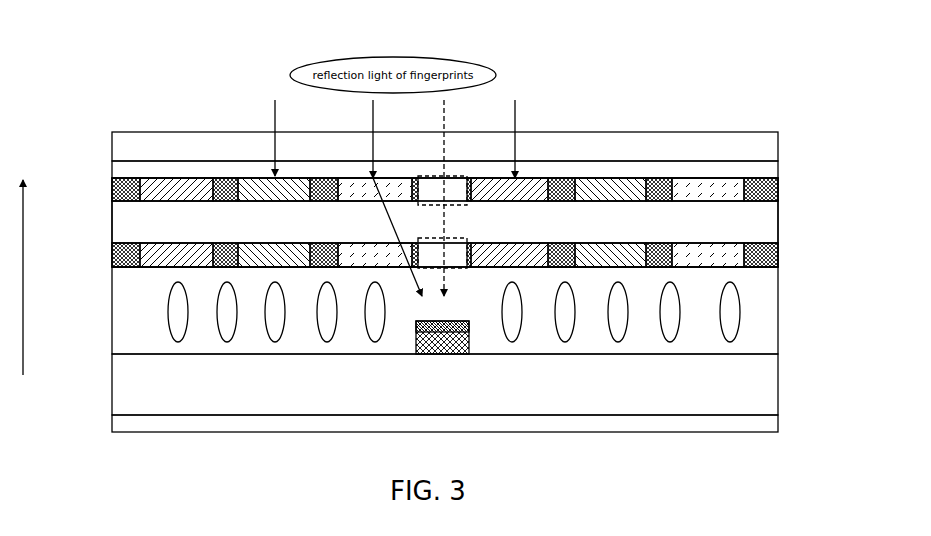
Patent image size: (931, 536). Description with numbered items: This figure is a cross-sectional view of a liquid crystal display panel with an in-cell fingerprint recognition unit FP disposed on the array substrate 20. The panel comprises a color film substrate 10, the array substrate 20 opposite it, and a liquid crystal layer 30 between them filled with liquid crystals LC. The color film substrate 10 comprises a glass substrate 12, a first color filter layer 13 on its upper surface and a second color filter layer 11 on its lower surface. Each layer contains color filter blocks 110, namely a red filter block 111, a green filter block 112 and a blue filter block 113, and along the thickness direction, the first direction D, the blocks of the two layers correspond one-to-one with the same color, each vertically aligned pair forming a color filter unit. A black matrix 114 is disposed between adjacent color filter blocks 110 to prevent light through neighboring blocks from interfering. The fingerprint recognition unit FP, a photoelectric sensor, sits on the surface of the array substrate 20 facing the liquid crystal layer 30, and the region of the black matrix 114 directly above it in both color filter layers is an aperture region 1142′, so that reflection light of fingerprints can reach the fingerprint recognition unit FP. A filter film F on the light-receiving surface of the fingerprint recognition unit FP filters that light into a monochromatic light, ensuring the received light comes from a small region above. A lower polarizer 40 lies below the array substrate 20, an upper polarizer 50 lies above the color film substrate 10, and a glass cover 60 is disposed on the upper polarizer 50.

The color film substrate 10 is at (824, 184).
The second color filter layer 11 is at (788, 246).
The glass substrate 12 is at (788, 205).
The first color filter layer 13 is at (788, 181).
The array substrate 20 is at (778, 388).
The liquid crystal layer 30 is at (778, 318).
The lower polarizer 40 is at (778, 428).
The upper polarizer 50 is at (778, 166).
The glass cover 60 is at (778, 138).
The color filter blocks 110 is at (112, 102).
The red filter block 111 is at (195, 268).
The green filter block 112 is at (293, 268).
The blue filter block 113 is at (387, 268).
The black matrix 114 is at (112, 258).
The aperture region 1142′ is at (475, 213).
The filter film F is at (466, 323).
The fingerprint recognition unit FP is at (444, 355).
The liquid crystals LC is at (670, 318).
The first direction D is at (22, 264).